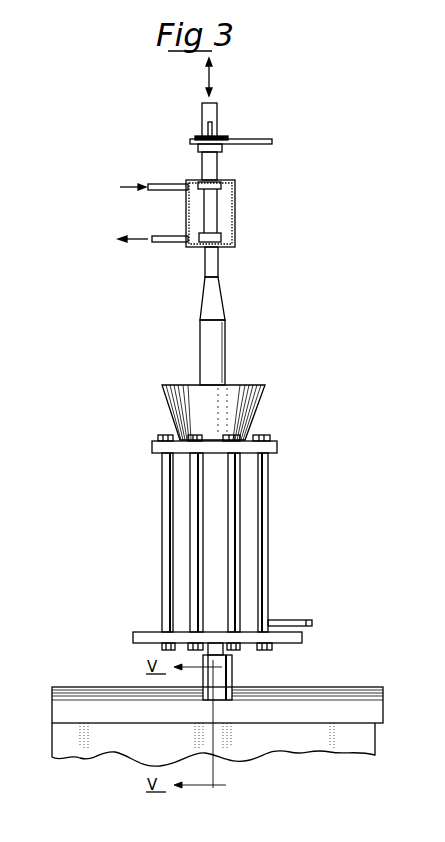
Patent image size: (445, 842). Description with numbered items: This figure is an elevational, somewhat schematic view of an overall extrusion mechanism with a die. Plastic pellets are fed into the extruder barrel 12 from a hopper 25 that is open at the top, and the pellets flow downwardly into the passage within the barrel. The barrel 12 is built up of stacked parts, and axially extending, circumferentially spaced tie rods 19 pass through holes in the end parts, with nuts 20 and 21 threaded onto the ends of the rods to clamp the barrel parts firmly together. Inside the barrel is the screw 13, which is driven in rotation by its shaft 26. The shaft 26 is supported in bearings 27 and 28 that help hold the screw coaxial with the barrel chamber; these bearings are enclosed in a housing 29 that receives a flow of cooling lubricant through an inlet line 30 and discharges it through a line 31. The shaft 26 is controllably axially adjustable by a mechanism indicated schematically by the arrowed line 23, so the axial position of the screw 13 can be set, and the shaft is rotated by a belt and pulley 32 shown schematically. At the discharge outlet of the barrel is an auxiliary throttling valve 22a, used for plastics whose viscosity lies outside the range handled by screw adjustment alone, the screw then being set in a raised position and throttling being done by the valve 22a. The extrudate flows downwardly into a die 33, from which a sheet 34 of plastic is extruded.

The barrel 12 is at (243, 527).
The screw 13 is at (228, 340).
The tie rods 19 is at (264, 480).
The nuts 20 is at (263, 651).
The nuts 21 is at (268, 437).
The auxiliary throttling valve 22a is at (286, 620).
The arrowed line 23 is at (214, 78).
The hopper 25 is at (262, 400).
The shaft 26 is at (220, 263).
The bearing 27 is at (236, 236).
The bearing 28 is at (236, 184).
The housing 29 is at (236, 211).
The inlet line 30 is at (160, 192).
The line 31 is at (162, 244).
The belt and pulley 32 is at (244, 140).
The die 33 is at (316, 681).
The sheet 34 is at (376, 742).